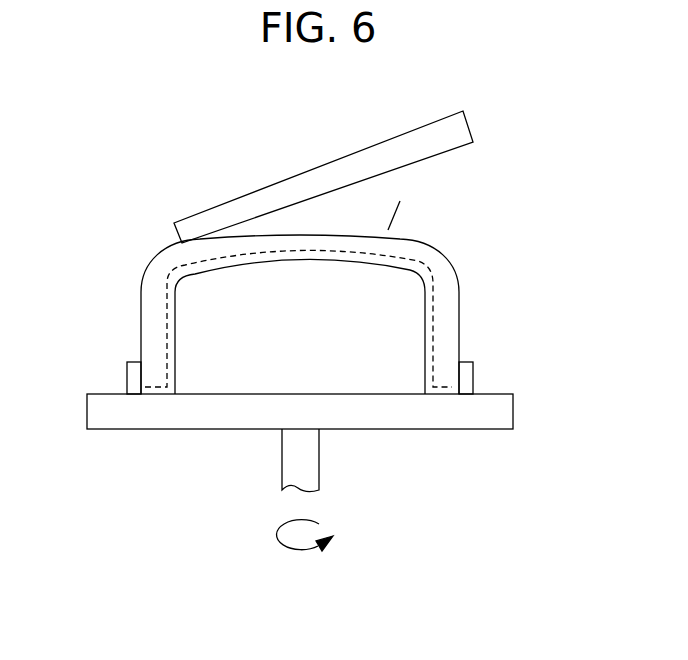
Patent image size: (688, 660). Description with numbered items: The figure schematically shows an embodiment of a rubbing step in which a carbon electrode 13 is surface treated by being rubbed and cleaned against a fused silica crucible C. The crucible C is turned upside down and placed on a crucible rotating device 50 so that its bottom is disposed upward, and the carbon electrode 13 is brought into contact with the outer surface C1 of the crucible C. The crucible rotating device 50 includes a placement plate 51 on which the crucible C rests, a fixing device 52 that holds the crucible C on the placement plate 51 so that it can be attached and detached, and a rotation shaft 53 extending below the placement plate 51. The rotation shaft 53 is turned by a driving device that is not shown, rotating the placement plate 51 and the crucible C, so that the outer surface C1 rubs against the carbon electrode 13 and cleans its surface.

The carbon electrode 13 is at (250, 193).
The fused silica crucible C is at (460, 305).
The outer surface C1 is at (400, 205).
The crucible rotating device 50 is at (276, 497).
The placement plate 51 is at (117, 429).
The fixing device 52 is at (127, 377).
The rotation shaft 53 is at (282, 460).